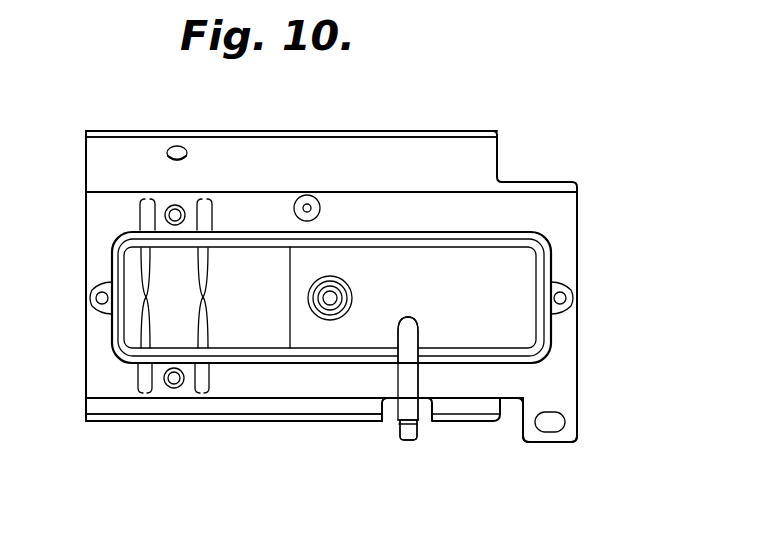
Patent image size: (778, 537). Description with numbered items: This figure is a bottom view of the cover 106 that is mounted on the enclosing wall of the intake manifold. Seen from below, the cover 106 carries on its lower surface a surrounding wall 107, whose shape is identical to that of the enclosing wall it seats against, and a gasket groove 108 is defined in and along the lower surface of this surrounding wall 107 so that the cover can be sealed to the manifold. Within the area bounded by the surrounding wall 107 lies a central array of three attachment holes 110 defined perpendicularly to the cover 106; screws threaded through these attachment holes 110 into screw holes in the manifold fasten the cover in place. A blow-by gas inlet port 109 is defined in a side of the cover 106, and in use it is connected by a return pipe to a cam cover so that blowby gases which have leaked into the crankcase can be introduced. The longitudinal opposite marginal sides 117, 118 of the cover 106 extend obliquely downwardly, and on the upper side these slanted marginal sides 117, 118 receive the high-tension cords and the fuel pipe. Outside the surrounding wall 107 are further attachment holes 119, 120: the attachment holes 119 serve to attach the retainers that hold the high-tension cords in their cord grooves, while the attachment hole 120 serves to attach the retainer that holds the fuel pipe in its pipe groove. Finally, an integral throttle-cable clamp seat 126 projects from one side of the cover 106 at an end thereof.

The cover 106 is at (568, 228).
The surrounding wall 107 is at (510, 230).
The gasket groove 108 is at (460, 241).
The blow-by gas inlet port 109 is at (410, 438).
The attachment holes 110 is at (98, 305).
The longitudinal marginal side 117 is at (460, 148).
The longitudinal marginal side 118 is at (312, 420).
The attachment holes 119 is at (183, 208).
The attachment hole 120 is at (312, 205).
The throttle-cable clamp seat 126 is at (568, 413).